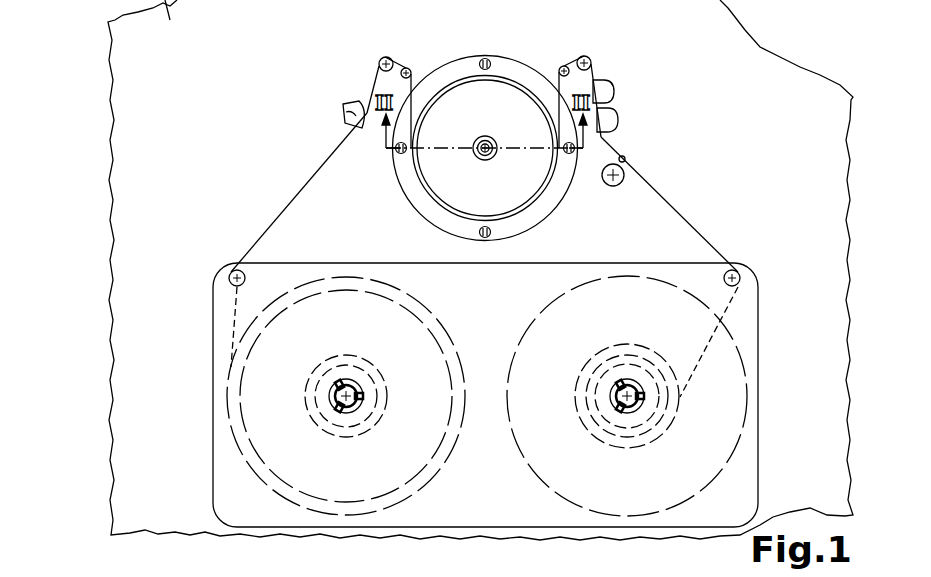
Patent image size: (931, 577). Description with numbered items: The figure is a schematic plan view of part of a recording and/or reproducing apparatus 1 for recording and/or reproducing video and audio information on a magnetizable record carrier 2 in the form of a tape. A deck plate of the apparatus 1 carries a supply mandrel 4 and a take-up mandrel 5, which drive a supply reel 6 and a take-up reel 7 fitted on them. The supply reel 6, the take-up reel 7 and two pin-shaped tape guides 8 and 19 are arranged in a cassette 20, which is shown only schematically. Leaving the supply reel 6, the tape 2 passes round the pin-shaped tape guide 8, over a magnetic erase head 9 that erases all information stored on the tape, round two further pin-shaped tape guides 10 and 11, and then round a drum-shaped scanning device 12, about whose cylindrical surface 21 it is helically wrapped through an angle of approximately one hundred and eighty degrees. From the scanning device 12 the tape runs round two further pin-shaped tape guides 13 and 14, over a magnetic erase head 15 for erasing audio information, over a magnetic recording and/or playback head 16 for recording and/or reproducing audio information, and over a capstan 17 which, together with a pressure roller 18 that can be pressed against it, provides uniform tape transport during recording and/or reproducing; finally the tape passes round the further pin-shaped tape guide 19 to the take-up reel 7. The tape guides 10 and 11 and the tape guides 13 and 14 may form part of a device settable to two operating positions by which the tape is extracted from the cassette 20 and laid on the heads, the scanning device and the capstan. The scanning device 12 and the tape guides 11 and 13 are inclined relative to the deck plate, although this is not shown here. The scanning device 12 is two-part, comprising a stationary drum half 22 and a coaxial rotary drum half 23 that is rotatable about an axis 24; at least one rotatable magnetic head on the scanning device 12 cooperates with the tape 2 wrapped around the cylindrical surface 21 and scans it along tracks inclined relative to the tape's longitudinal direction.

The recording and/or reproducing apparatus 1 is at (176, 537).
The record carrier 2 is at (296, 200).
The supply mandrel 4 is at (350, 400).
The take-up mandrel 5 is at (632, 400).
The supply reel 6 is at (452, 443).
The take-up reel 7 is at (526, 445).
The pin-shaped tape guide 8 is at (231, 271).
The magnetic erase head 9 is at (348, 110).
The pin-shaped tape guide 10 is at (383, 58).
The pin-shaped tape guide 11 is at (407, 67).
The drum-shaped scanning device 12 is at (460, 46).
The pin-shaped tape guide 13 is at (563, 66).
The pin-shaped tape guide 14 is at (589, 57).
The magnetic erase head 15 is at (613, 88).
The magnetic recording and/or playback head 16 is at (619, 120).
The capstan 17 is at (626, 158).
The pressure roller 18 is at (621, 185).
The pin-shaped tape guide 19 is at (741, 268).
The cassette 20 is at (755, 458).
The cylindrical surface 21 is at (505, 63).
The stationary drum half 22 is at (556, 192).
The rotary drum half 23 is at (441, 178).
The axis 24 is at (485, 161).